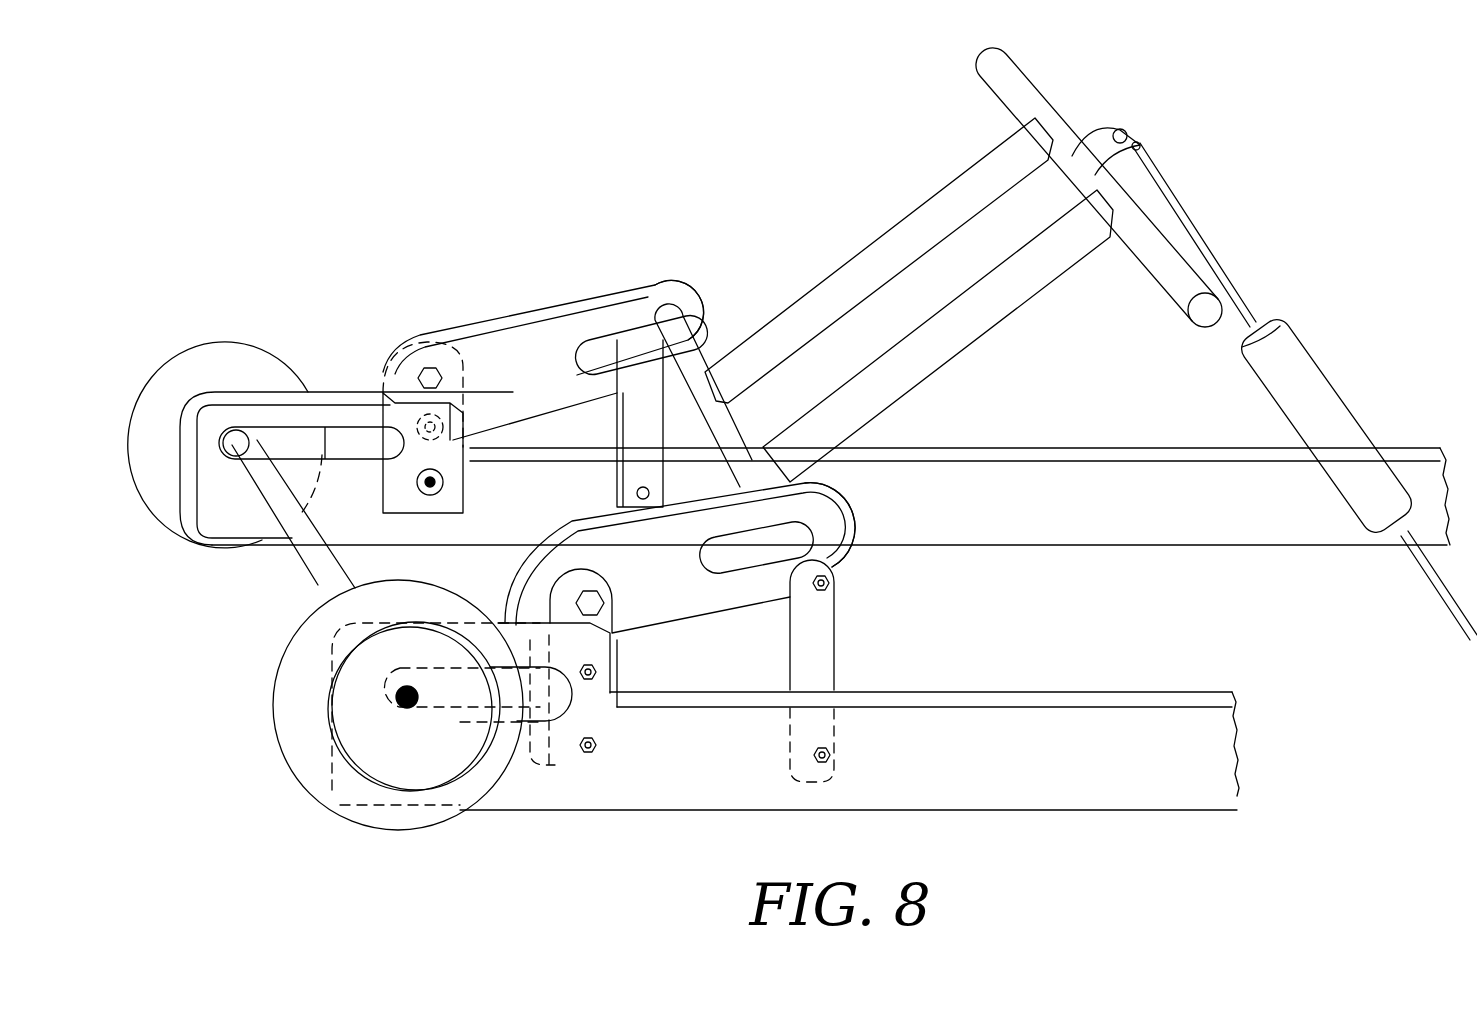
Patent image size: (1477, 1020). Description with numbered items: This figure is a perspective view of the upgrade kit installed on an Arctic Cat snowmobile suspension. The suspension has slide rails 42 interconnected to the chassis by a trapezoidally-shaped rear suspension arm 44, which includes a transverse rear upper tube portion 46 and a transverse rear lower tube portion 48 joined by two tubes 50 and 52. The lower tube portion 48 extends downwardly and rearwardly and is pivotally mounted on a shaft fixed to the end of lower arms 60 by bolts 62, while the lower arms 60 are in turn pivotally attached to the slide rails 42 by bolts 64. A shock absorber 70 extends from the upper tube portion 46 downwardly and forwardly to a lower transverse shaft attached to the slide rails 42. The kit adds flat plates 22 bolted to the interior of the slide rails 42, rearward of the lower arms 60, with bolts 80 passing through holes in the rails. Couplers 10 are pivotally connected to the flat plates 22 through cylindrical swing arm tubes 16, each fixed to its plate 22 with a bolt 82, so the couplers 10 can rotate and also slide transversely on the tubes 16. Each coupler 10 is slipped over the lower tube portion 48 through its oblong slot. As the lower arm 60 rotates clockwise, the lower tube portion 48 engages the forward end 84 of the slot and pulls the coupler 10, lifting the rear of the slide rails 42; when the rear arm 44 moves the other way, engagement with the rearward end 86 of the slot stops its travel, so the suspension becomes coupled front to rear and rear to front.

The coupler 10 is at (532, 327).
The swing arm tube 16 is at (432, 378).
The flat plate 22 is at (430, 457).
The slide rail 42 is at (1422, 482).
The rear suspension arm 44 is at (909, 300).
The upper tube portion 46 is at (1028, 93).
The lower tube portion 48 is at (732, 420).
The tube 50 is at (892, 247).
The tube 52 is at (950, 343).
The lower arm 60 is at (640, 467).
The bolt 62 is at (830, 583).
The bolt 64 is at (832, 757).
The shock absorber 70 is at (1293, 367).
The bolt 80 is at (590, 680).
The bolt 82 is at (590, 603).
The forward end of slot 84 is at (703, 330).
The rearward end of slot 86 is at (577, 330).